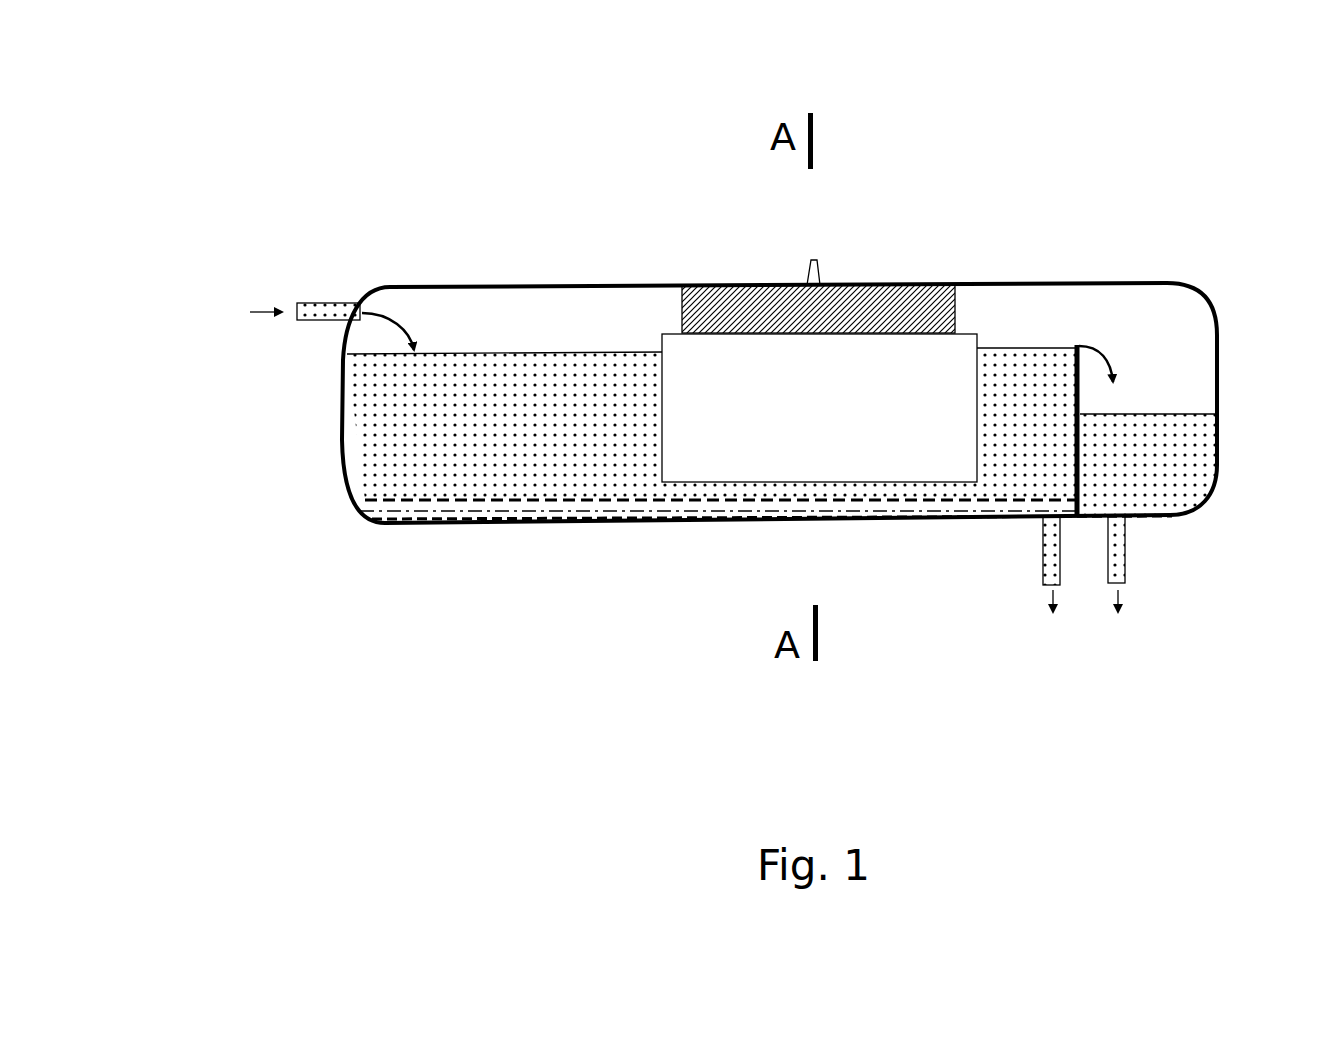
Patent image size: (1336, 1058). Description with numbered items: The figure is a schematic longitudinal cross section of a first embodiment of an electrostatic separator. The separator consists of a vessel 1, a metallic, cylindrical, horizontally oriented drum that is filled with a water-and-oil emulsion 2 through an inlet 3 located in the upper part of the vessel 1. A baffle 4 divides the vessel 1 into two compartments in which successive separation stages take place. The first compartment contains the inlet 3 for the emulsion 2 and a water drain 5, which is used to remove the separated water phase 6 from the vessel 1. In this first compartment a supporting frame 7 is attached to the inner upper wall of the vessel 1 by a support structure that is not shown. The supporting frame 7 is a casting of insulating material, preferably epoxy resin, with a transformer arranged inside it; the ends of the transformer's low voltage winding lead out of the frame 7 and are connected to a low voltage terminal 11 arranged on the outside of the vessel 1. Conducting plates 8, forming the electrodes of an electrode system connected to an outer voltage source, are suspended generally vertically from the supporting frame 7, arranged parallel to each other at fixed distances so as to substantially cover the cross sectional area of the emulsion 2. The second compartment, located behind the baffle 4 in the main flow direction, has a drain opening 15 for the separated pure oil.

The vessel 1 is at (515, 280).
The water-and-oil emulsion 2 is at (440, 423).
The inlet 3 is at (288, 293).
The baffle 4 is at (1085, 459).
The water drain 5 is at (1065, 590).
The water phase 6 is at (515, 512).
The supporting frame 7 is at (700, 287).
The conducting plates 8 is at (657, 400).
The low voltage terminal 11 is at (812, 262).
The drain opening 15 is at (1128, 567).